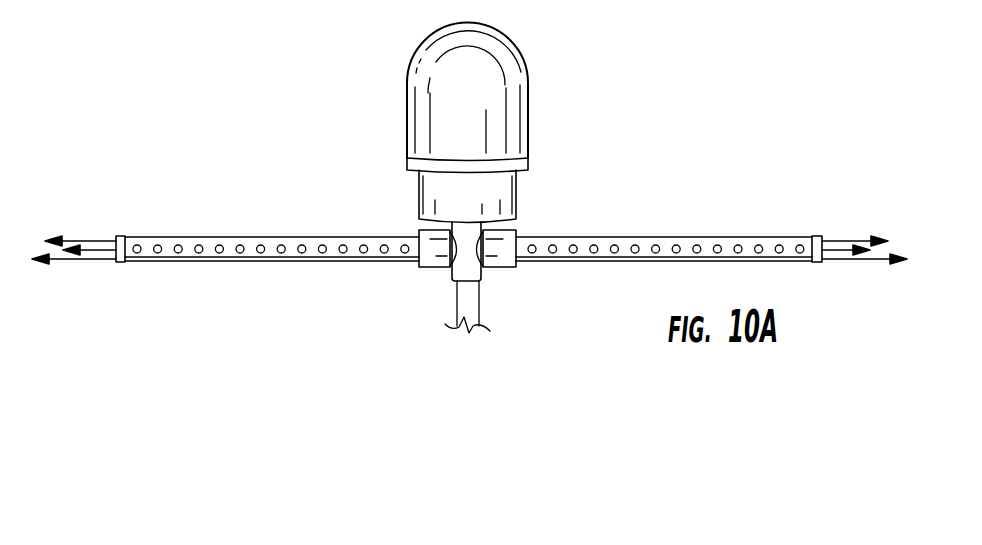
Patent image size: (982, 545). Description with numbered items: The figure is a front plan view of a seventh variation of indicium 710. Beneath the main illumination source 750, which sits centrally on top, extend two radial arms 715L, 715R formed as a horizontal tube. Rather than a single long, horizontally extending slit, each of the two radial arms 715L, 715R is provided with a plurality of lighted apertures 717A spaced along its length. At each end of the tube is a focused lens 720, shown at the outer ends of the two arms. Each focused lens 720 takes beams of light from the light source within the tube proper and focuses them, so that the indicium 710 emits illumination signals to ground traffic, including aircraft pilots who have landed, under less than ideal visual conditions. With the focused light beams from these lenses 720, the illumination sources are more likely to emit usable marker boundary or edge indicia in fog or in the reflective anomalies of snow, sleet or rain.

The indicium 710 is at (325, 88).
The main illumination source 750 is at (518, 209).
The left radial arm 715L is at (270, 242).
The right radial arm 715R is at (697, 242).
The apertures 717A is at (178, 253).
The focused lens 720 is at (116, 240).